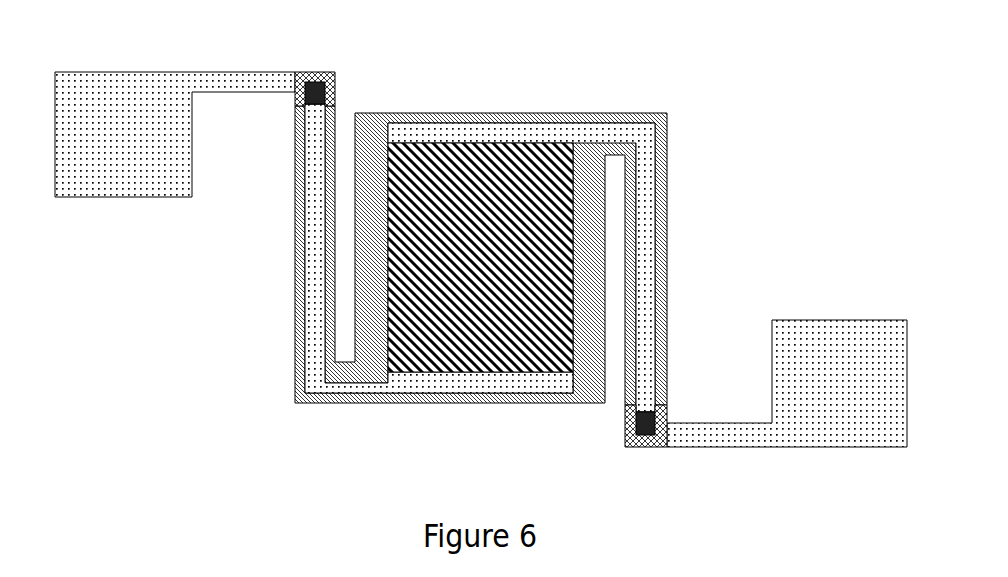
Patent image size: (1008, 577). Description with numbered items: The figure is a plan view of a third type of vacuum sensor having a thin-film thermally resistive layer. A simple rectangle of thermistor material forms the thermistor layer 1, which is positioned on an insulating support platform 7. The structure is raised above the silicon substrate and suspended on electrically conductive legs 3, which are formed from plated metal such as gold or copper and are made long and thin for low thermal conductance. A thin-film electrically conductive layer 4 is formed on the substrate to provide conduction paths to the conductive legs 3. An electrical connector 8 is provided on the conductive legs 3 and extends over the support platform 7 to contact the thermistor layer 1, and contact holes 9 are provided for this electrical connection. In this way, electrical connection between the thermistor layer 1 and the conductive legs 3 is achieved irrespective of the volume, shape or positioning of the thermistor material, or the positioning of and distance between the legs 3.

The thermistor layer 1 is at (505, 177).
The conductive legs 3 is at (333, 73).
The electrically conductive layer 4 is at (132, 168).
The insulating support platform 7 is at (457, 118).
The electrical connector 8 is at (311, 298).
The contact holes 9 is at (308, 102).